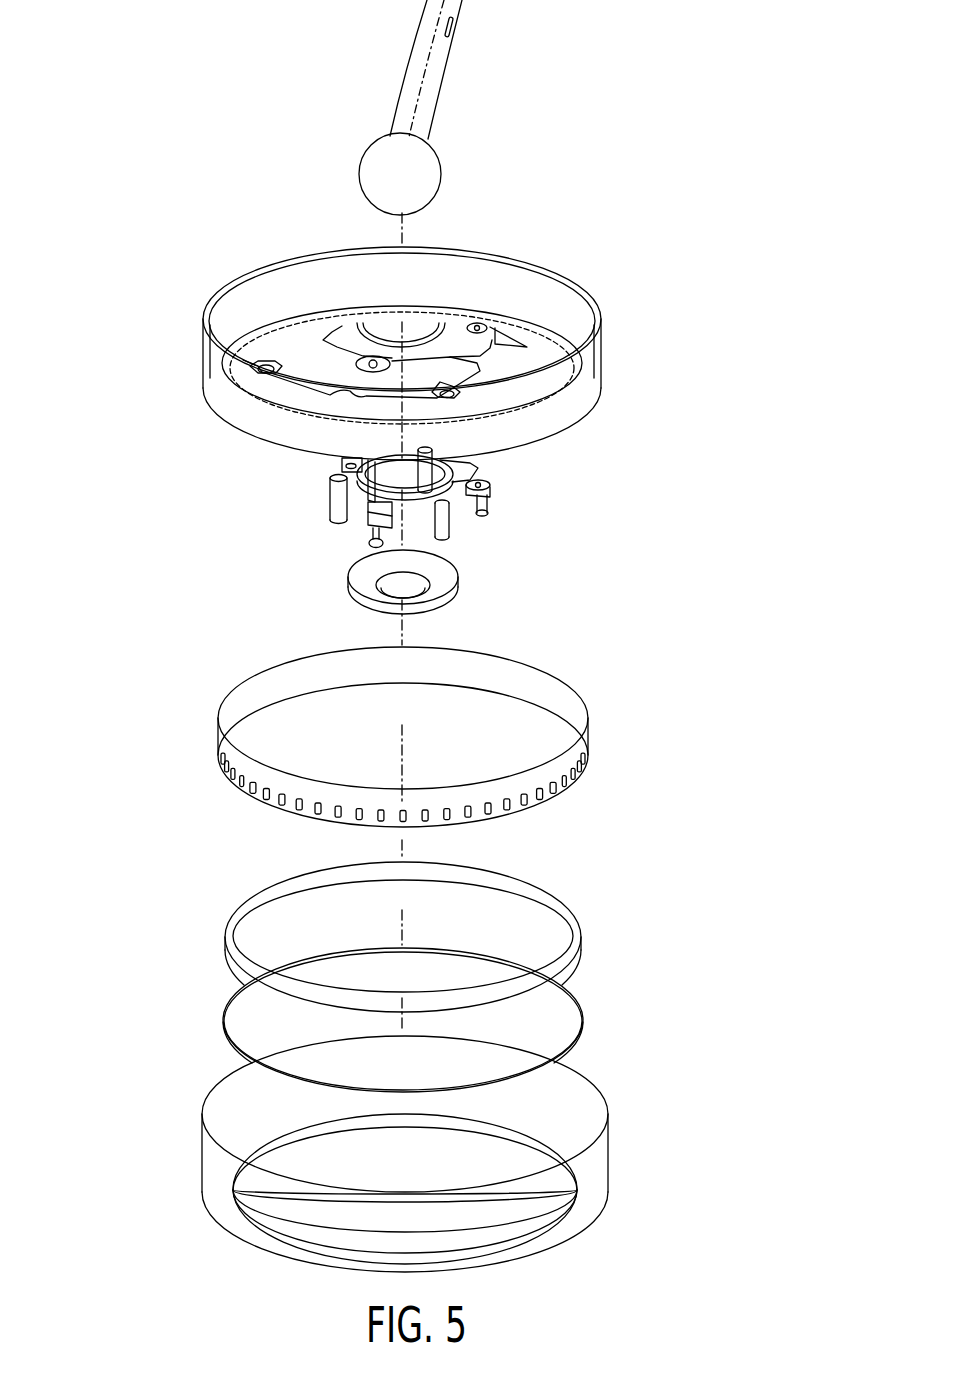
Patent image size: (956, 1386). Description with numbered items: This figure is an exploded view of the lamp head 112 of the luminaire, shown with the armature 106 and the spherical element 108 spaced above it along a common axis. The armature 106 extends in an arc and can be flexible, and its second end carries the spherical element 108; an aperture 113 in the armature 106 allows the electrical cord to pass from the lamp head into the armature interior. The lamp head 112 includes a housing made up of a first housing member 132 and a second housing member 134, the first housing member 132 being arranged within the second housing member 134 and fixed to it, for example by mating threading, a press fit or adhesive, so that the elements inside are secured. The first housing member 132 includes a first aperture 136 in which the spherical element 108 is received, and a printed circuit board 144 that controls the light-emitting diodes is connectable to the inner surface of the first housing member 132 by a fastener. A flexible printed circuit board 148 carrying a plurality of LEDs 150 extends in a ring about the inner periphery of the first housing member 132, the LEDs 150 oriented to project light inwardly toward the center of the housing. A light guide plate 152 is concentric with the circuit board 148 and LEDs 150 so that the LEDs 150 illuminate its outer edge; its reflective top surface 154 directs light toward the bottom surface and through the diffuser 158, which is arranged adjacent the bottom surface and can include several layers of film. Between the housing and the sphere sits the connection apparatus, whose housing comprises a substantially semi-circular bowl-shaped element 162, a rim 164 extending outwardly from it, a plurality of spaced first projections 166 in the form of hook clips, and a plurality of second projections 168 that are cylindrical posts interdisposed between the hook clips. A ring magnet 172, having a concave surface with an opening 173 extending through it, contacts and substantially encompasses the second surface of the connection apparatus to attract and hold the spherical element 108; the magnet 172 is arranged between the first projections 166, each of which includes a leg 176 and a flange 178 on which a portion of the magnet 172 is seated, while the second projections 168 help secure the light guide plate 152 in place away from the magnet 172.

The armature 106 is at (436, 96).
The spherical element 108 is at (430, 174).
The aperture 113 is at (452, 30).
The lamp head 112 is at (153, 1280).
The first housing member 132 is at (437, 373).
The second housing member 134 is at (598, 1125).
The first aperture 136 is at (423, 325).
The printed circuit board 144 is at (318, 367).
The flexible printed circuit board 148 is at (422, 737).
The LEDs 150 is at (449, 811).
The light guide plate 152 is at (425, 914).
The reflective top surface 154 is at (543, 890).
The diffuser 158 is at (573, 1018).
The semi-circular bowl-shaped element 162 is at (410, 497).
The rim 164 is at (447, 465).
The first projections 166 is at (360, 480).
The second projections 168 is at (345, 522).
The magnet 172 is at (443, 599).
The opening 173 is at (410, 586).
The leg 176 is at (490, 505).
The flange 178 is at (380, 527).